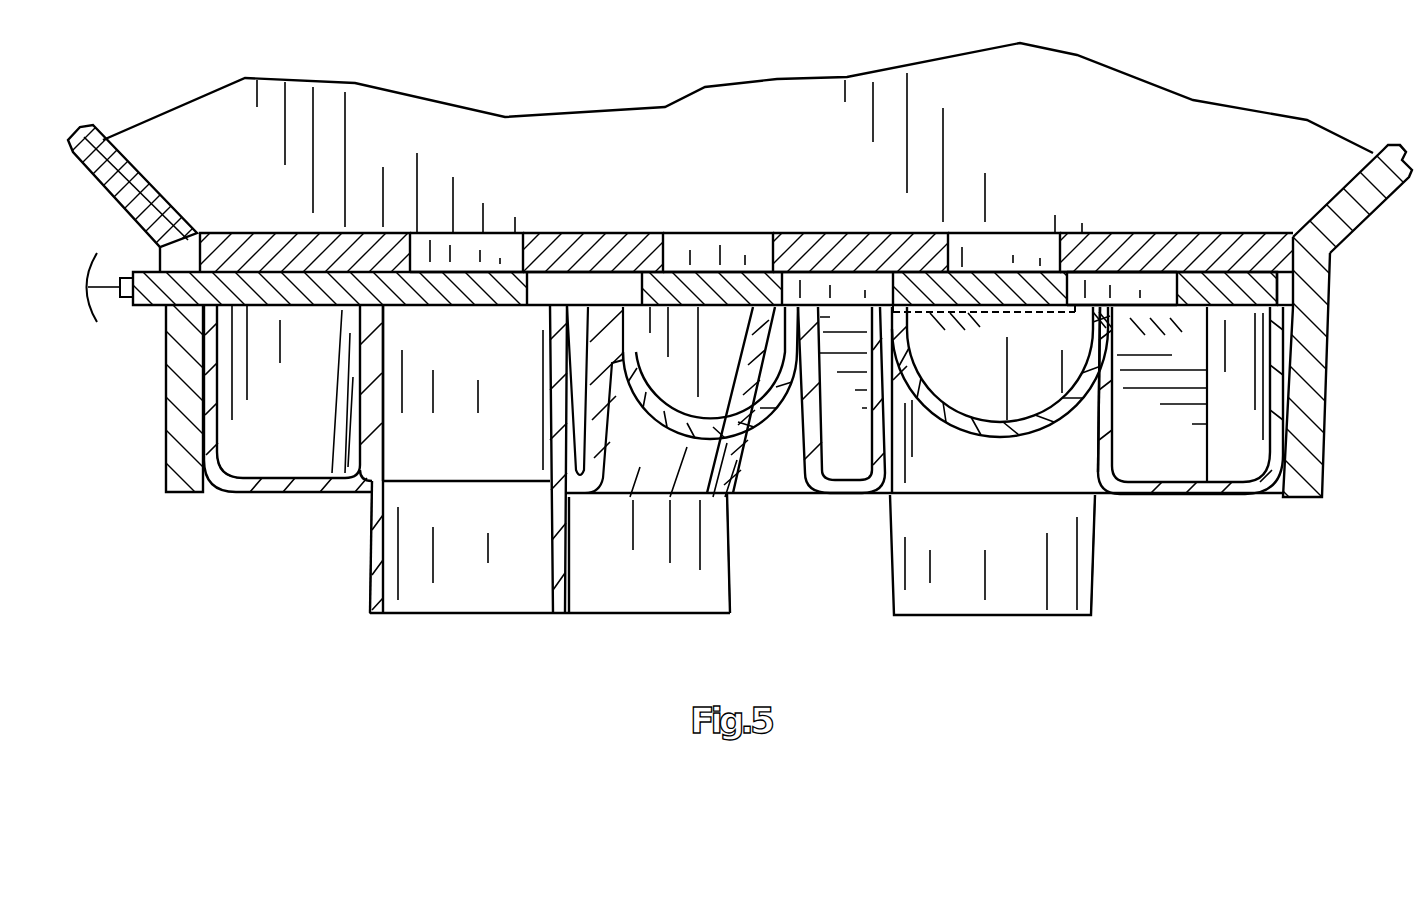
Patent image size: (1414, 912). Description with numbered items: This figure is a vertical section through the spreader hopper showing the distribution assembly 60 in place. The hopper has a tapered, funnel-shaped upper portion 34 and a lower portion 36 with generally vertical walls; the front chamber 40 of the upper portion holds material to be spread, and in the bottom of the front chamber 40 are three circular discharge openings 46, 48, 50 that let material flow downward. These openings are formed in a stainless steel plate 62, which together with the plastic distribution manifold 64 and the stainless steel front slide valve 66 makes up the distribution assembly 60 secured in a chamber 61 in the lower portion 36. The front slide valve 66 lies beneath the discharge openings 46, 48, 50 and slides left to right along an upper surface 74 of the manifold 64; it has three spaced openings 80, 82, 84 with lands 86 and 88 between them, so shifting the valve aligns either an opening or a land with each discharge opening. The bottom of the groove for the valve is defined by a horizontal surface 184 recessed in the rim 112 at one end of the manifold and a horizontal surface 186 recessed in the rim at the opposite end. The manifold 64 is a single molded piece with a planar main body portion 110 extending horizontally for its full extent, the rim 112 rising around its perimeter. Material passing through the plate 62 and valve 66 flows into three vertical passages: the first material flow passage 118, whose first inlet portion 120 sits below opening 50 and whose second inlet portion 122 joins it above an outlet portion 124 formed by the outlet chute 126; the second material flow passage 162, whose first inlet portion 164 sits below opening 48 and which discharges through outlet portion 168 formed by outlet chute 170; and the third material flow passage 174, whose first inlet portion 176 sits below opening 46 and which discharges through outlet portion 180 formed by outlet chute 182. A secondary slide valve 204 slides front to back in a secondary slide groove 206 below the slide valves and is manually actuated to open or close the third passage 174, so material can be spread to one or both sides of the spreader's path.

The upper portion 34 is at (1350, 217).
The lower portion 36 is at (1328, 338).
The front chamber 40 is at (720, 135).
The discharge opening 46 is at (1060, 263).
The discharge opening 48 is at (757, 235).
The discharge opening 50 is at (507, 235).
The distribution assembly 60 is at (962, 178).
The chamber 61 is at (215, 447).
The plate 62 is at (282, 230).
The distribution manifold 64 is at (1168, 500).
The front slide valve 66 is at (150, 308).
The upper surface 74 is at (376, 318).
The opening 80 is at (600, 236).
The opening 82 is at (851, 236).
The opening 84 is at (1173, 287).
The land 86 is at (1040, 293).
The land 88 is at (713, 307).
The main body portion 110 is at (263, 486).
The rim 112 is at (208, 413).
The first material flow passage 118 is at (411, 617).
The first inlet portion 120 is at (385, 445).
The second inlet portion 122 is at (470, 355).
The outlet portion 124 is at (458, 615).
The outlet chute 126 is at (367, 548).
The second material flow passage 162 is at (693, 618).
The first inlet portion 164 is at (687, 414).
The outlet portion 168 is at (627, 615).
The outlet chute 170 is at (730, 590).
The third material flow passage 174 is at (1036, 620).
The first inlet portion 176 is at (1017, 413).
The outlet portion 180 is at (972, 617).
The outlet chute 182 is at (1095, 577).
The horizontal surface 184 is at (1300, 297).
The horizontal surface 186 is at (208, 318).
The secondary slide valve 204 is at (988, 312).
The secondary slide groove 206 is at (1097, 316).